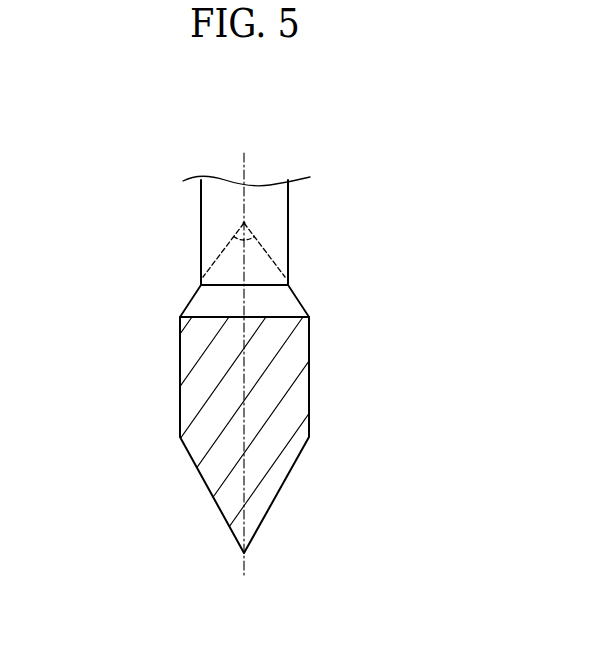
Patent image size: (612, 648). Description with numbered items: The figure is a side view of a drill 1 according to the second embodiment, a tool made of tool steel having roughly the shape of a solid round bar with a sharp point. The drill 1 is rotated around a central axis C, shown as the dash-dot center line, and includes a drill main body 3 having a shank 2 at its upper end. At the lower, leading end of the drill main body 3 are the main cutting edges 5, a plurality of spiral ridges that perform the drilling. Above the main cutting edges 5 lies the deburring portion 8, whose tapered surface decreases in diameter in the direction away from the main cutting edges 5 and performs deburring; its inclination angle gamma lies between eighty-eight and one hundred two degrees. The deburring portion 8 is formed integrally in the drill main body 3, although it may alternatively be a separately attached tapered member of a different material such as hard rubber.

The drill 1 is at (165, 196).
The shank 2 is at (288, 225).
The drill main body 3 is at (202, 233).
The main cutting edges 5 is at (290, 390).
The deburring portion 8 is at (296, 298).
The central axis C is at (247, 162).